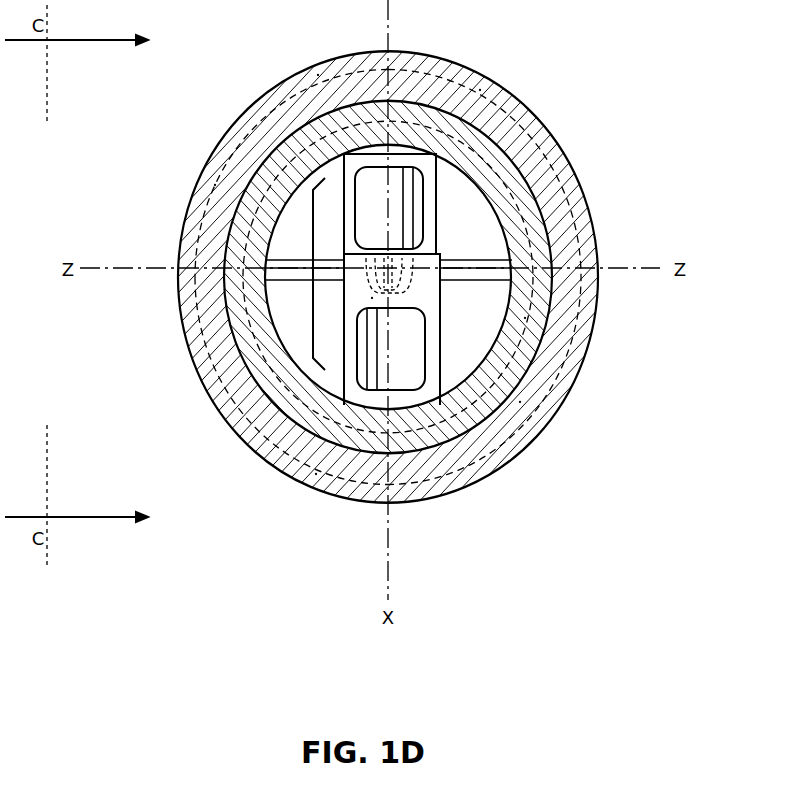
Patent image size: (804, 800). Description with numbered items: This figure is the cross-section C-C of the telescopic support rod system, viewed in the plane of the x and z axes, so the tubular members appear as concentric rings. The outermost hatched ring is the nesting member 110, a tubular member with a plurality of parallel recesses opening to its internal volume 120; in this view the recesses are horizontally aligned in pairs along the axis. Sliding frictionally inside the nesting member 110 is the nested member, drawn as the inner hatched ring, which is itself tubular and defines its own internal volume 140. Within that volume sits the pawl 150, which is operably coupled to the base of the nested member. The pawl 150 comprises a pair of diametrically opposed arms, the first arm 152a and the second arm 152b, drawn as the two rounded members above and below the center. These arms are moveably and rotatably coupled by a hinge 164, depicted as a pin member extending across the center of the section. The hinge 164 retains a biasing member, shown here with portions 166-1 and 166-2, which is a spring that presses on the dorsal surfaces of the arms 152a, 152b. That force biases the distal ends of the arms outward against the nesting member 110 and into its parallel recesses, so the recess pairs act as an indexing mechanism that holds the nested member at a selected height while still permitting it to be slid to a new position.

The nesting member 110 is at (336, 277).
The internal volume 120 is at (458, 235).
The internal volume 140 is at (466, 259).
The pawl 150 is at (313, 259).
The first arm 152a is at (432, 213).
The second arm 152b is at (433, 328).
The hinge 164 is at (280, 282).
The first conductor 166-1 is at (413, 189).
The second conductor 166-2 is at (367, 372).